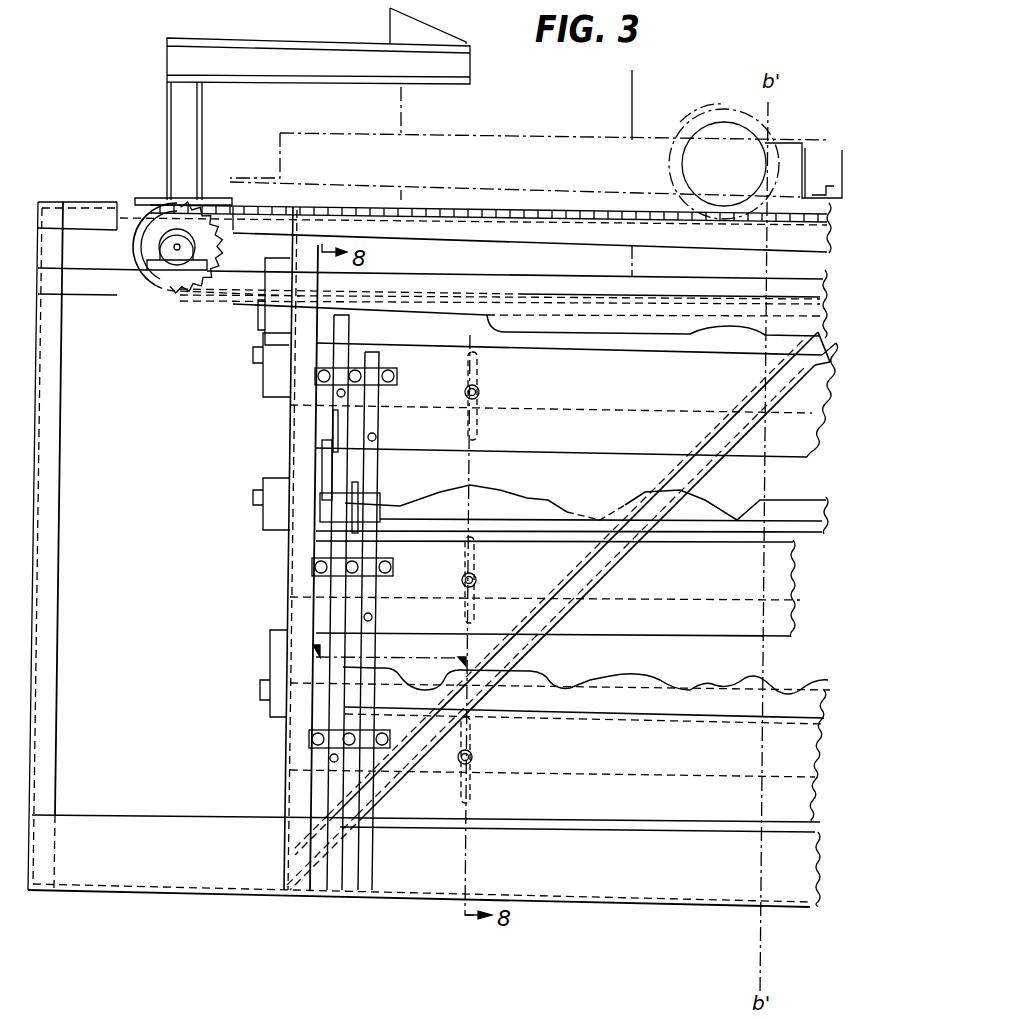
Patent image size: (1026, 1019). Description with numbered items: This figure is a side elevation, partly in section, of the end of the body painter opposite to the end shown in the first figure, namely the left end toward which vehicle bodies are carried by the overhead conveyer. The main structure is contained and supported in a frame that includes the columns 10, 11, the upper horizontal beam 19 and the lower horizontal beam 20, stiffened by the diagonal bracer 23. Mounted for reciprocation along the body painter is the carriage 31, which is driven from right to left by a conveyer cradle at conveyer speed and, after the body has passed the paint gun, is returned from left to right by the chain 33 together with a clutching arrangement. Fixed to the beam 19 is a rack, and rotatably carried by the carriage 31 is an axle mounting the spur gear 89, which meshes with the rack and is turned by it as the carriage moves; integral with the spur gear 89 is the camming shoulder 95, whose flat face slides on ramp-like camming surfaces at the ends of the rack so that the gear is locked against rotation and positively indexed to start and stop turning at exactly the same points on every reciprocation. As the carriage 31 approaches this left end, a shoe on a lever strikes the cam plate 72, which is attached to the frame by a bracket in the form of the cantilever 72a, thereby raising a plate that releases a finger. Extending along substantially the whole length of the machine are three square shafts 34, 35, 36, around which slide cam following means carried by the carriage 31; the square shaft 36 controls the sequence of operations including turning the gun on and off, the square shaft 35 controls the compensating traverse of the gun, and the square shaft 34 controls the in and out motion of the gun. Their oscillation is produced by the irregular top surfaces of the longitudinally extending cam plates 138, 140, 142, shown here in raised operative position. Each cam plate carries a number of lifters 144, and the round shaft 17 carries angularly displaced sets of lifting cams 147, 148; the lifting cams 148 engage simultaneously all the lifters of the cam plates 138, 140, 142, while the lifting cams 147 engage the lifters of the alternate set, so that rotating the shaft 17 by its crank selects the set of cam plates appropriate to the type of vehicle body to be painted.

The column 10 is at (62, 692).
The column 11 is at (293, 746).
The round shaft 17 is at (559, 550).
The horizontal beam 19 is at (507, 232).
The horizontal beam 20 is at (175, 821).
The diagonal bracer 23 is at (700, 483).
The carriage 31 is at (723, 159).
The chain 33 is at (297, 207).
The square shaft 34 is at (560, 737).
The square shaft 35 is at (824, 382).
The square shaft 36 is at (697, 282).
The cam plate 72 is at (455, 38).
The cantilever 72a is at (205, 50).
The spur gear 89 is at (700, 118).
The camming shoulder 95 is at (670, 160).
The cam plate 138 is at (637, 678).
The cam plate 140 is at (500, 490).
The cam plate 142 is at (495, 323).
The lifter 144 is at (333, 441).
The lifting cam 147 is at (378, 504).
The lifting cam 148 is at (322, 466).